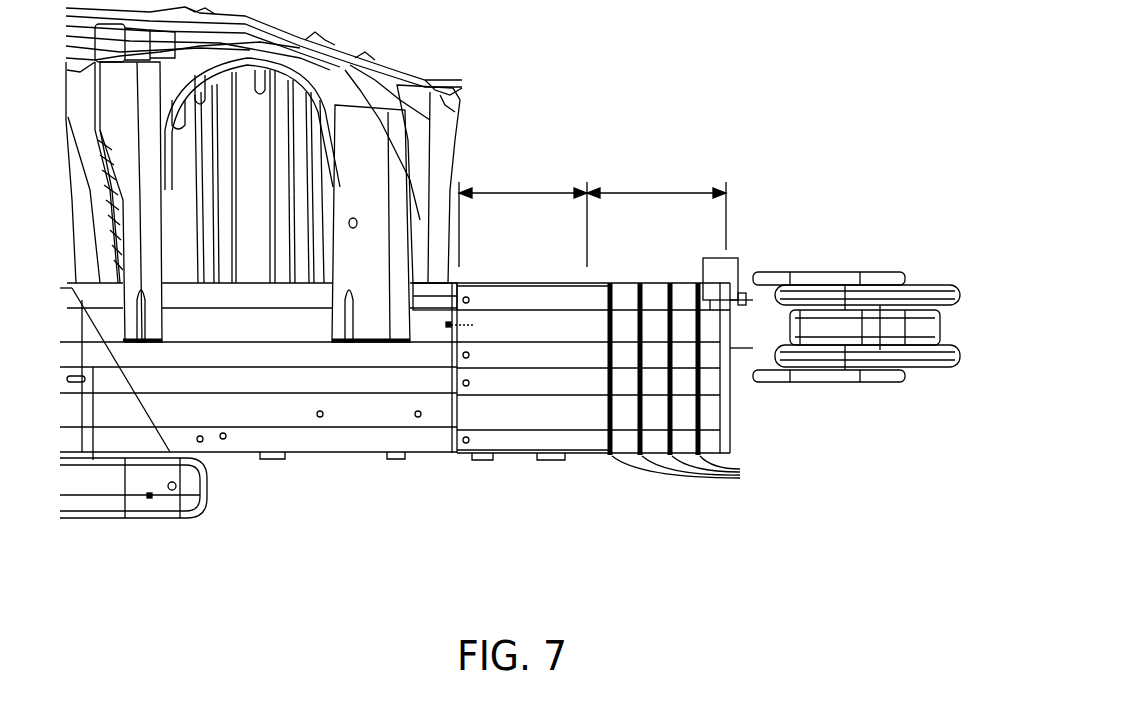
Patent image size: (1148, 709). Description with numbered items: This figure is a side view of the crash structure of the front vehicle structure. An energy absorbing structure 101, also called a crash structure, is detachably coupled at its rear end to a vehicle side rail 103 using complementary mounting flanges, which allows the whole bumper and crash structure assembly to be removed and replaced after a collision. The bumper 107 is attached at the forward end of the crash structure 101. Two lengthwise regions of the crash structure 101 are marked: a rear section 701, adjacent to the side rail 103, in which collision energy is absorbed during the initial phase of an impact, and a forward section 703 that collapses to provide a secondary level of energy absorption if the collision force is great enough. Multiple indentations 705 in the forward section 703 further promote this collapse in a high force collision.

The energy absorbing structure 101 is at (556, 445).
The vehicle side rail 103 is at (298, 442).
The bumper 107 is at (841, 258).
The rear section 701 is at (510, 193).
The forward section 703 is at (648, 193).
The indentations 705 is at (700, 472).